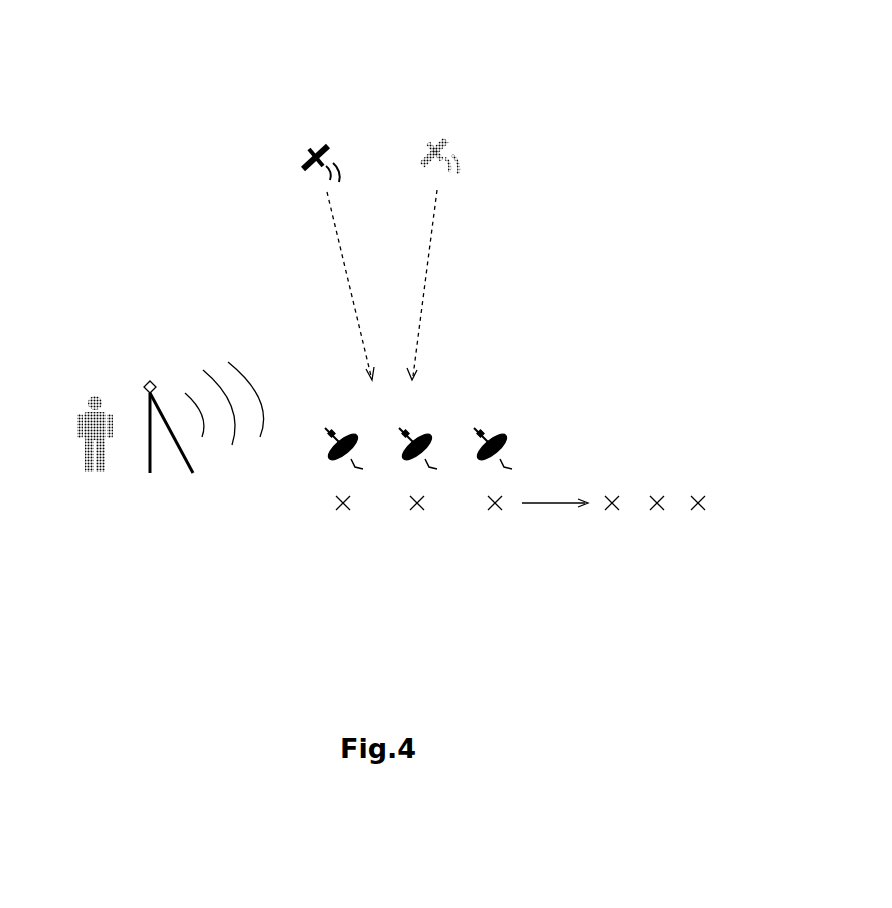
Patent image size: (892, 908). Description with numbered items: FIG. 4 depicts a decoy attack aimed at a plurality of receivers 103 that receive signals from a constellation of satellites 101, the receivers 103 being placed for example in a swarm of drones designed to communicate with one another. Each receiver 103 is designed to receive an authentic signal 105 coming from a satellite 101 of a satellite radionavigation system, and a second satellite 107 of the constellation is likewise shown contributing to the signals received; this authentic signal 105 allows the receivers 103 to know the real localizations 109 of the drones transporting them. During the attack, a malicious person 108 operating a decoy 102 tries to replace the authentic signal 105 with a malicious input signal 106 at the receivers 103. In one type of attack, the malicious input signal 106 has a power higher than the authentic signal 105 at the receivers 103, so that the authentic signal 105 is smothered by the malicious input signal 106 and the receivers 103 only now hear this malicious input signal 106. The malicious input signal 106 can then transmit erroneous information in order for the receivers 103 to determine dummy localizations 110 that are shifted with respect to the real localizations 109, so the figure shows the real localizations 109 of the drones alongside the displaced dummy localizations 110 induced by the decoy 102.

The satellite 101 is at (308, 135).
The decoy 102 is at (167, 477).
The receiver 103 is at (424, 391).
The authentic signal 105 is at (347, 248).
The malicious input signal 106 is at (200, 358).
The second satellite 107 is at (472, 138).
The malicious person 108 is at (65, 422).
The real localization 109 is at (362, 550).
The dummy localization 110 is at (619, 563).